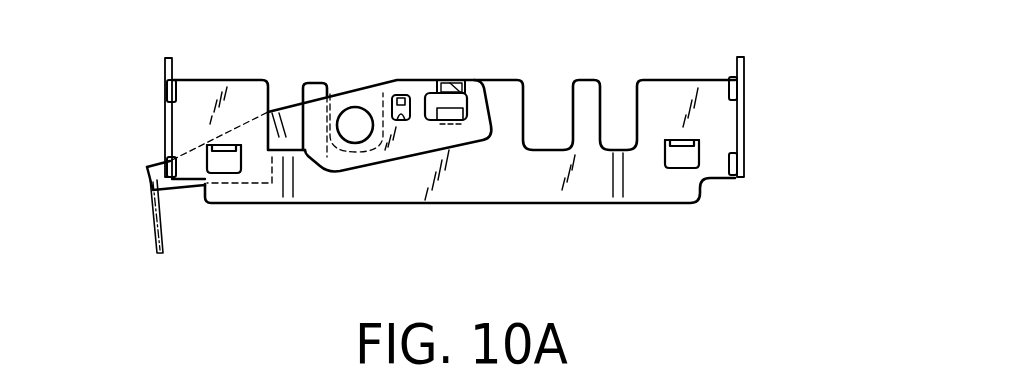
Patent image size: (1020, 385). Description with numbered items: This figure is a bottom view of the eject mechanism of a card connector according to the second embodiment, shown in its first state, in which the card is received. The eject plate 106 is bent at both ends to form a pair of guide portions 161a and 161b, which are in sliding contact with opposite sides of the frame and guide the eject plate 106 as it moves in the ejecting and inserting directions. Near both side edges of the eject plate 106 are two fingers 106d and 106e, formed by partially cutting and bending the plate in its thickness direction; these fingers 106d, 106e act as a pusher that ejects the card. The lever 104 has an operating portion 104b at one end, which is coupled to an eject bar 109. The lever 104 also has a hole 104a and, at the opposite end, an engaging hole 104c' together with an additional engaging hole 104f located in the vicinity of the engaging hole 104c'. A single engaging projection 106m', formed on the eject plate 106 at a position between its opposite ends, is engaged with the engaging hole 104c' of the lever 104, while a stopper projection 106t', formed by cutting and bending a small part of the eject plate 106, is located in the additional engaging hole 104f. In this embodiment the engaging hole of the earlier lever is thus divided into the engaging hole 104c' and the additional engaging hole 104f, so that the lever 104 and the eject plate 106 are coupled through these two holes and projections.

The eject plate 106 is at (218, 81).
The lever 104 is at (312, 80).
The hole 104a is at (357, 106).
The operating portion 104b is at (147, 178).
The engaging hole 104c' is at (432, 176).
The additional engaging hole 104f is at (405, 121).
The stopper projection 106t' is at (437, 64).
The engaging projection 106m' is at (507, 50).
The finger 106d is at (226, 152).
The finger 106e is at (680, 147).
The eject bar 109 is at (153, 213).
The guide portion 161a is at (165, 130).
The guide portion 161b is at (744, 120).